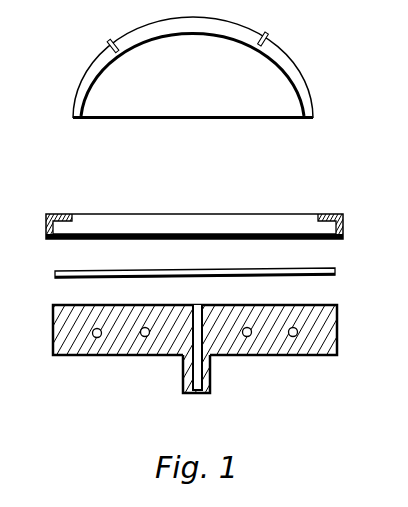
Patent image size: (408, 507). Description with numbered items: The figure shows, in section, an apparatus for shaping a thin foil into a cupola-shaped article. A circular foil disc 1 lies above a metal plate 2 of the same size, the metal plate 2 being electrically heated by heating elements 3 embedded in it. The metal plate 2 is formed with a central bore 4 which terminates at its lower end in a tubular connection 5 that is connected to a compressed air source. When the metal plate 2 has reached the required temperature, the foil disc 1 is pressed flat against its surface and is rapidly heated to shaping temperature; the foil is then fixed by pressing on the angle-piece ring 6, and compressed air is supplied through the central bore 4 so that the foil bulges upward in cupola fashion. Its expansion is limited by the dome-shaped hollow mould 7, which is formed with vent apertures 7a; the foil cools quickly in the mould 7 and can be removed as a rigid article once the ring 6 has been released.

The circular foil disc 1 is at (336, 272).
The metal plate 2 is at (325, 338).
The heating elements 3 is at (95, 338).
The central bore 4 is at (207, 382).
The tubular connection 5 is at (183, 392).
The ring 6 is at (343, 212).
The dome-shaped hollow mould 7 is at (308, 80).
The vent apertures 7a is at (268, 32).